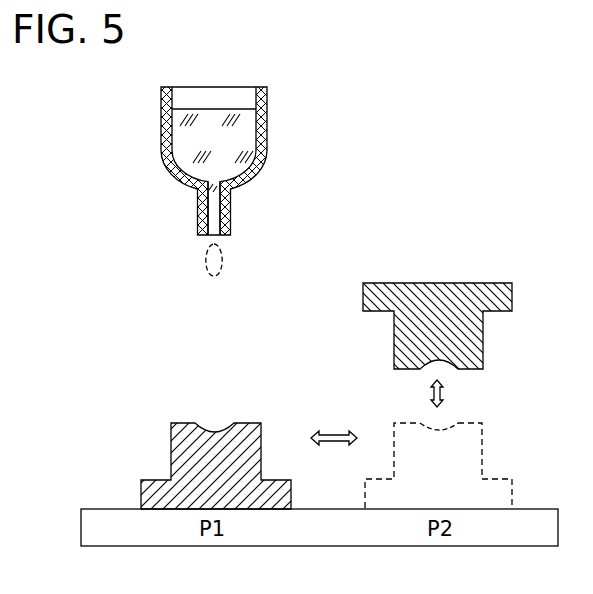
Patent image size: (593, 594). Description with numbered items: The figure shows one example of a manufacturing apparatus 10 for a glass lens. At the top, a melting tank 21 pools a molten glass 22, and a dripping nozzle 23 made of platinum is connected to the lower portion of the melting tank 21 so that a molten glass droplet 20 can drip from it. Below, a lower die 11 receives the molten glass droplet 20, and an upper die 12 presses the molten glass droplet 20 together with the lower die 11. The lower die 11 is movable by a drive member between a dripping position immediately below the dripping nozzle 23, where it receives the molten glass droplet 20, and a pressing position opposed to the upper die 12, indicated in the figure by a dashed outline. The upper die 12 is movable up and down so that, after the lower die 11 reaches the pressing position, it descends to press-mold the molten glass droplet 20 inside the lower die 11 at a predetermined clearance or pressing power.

The manufacturing apparatus 10 is at (398, 184).
The lower die 11 is at (170, 445).
The upper die 12 is at (483, 331).
The molten glass droplet 20 is at (205, 262).
The melting tank 21 is at (160, 136).
The molten glass 22 is at (204, 116).
The dripping nozzle 23 is at (197, 217).